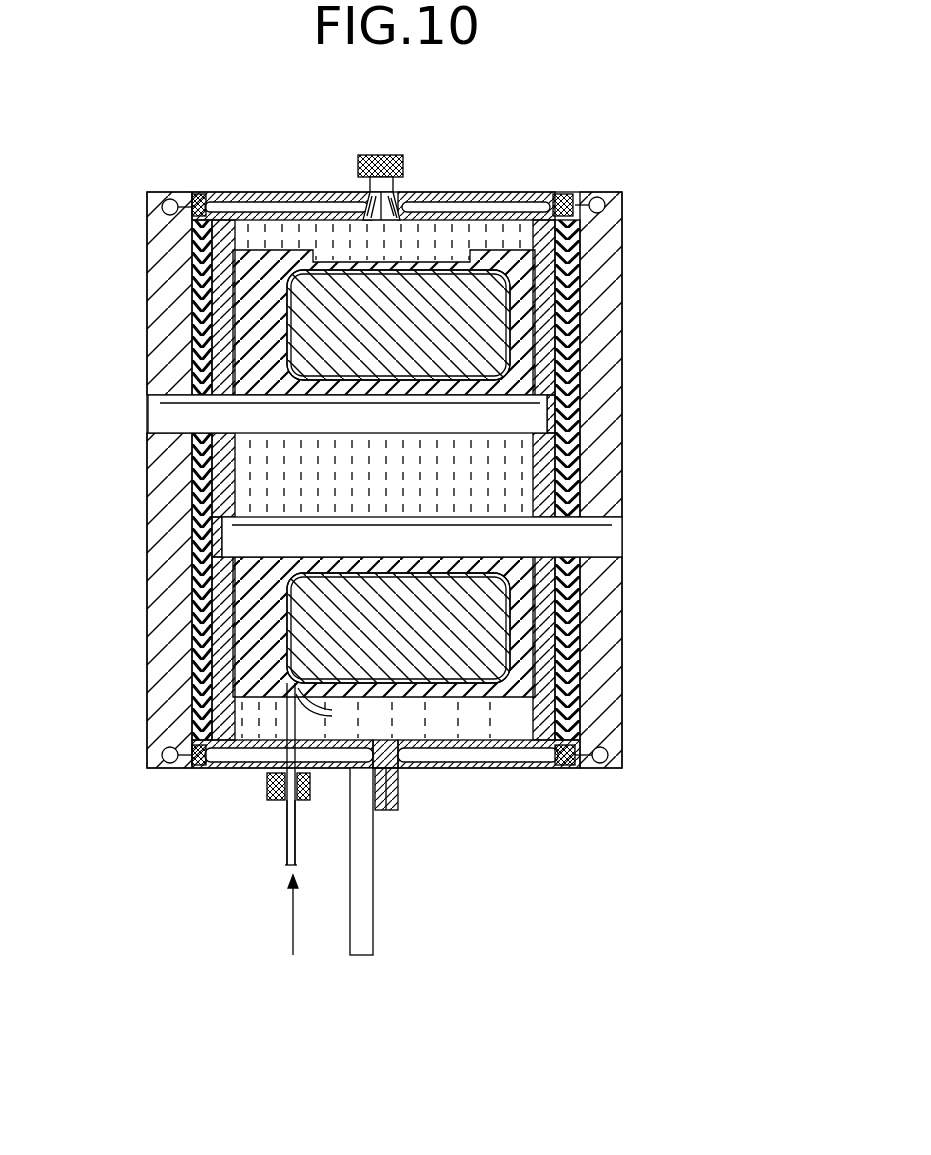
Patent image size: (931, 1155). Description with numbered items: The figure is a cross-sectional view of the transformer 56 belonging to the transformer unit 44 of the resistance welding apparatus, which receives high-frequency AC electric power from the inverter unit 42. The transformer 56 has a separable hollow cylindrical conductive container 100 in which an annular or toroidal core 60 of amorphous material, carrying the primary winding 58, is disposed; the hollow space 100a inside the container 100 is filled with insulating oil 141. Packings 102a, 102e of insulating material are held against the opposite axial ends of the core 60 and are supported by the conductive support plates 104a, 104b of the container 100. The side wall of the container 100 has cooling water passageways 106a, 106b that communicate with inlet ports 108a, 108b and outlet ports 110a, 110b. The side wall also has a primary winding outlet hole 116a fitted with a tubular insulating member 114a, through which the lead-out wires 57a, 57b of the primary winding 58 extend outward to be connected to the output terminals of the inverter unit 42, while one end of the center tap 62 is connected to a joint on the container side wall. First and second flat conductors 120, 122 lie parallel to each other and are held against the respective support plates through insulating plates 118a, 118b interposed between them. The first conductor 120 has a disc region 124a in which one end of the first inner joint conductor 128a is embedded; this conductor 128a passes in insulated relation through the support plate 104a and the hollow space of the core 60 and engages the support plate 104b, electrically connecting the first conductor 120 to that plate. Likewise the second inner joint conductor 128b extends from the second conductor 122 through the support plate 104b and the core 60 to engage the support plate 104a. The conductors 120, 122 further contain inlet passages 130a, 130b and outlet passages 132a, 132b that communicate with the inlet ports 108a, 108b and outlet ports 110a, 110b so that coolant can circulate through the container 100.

The inverter unit 42 is at (235, 927).
The transformer unit 44 is at (765, 142).
The transformer 56 is at (509, 178).
The lead-out wire 57a is at (296, 808).
The lead-out wire 57b is at (333, 713).
The primary winding 58 is at (453, 690).
The core 60 is at (410, 348).
The center tap 62 is at (380, 823).
The conductive container 100 is at (348, 178).
The hollow space 100a is at (560, 460).
The packing 102a is at (245, 337).
The packing 102e is at (520, 285).
The support plate 104a is at (200, 462).
The support plate 104b is at (582, 482).
The cooling water passageway 106a is at (263, 207).
The cooling water passageway 106b is at (447, 207).
The inlet port 108a is at (205, 192).
The inlet port 108b is at (567, 192).
The outlet port 110a is at (195, 766).
The outlet port 110b is at (560, 766).
The tubular insulating member 114a is at (283, 776).
The primary winding outlet hole 116a is at (278, 802).
The insulating plate 118a is at (200, 582).
The insulating plate 118b is at (580, 592).
The first flat conductor 120 is at (145, 250).
The second flat conductor 122 is at (627, 324).
The disc region 124a is at (180, 522).
The first inner joint conductor 128a is at (160, 418).
The second inner joint conductor 128b is at (600, 540).
The inlet passage 130a is at (185, 157).
The inlet passage 130b is at (608, 208).
The outlet passage 132a is at (163, 754).
The outlet passage 132b is at (712, 756).
The insulating oil 141 is at (525, 495).